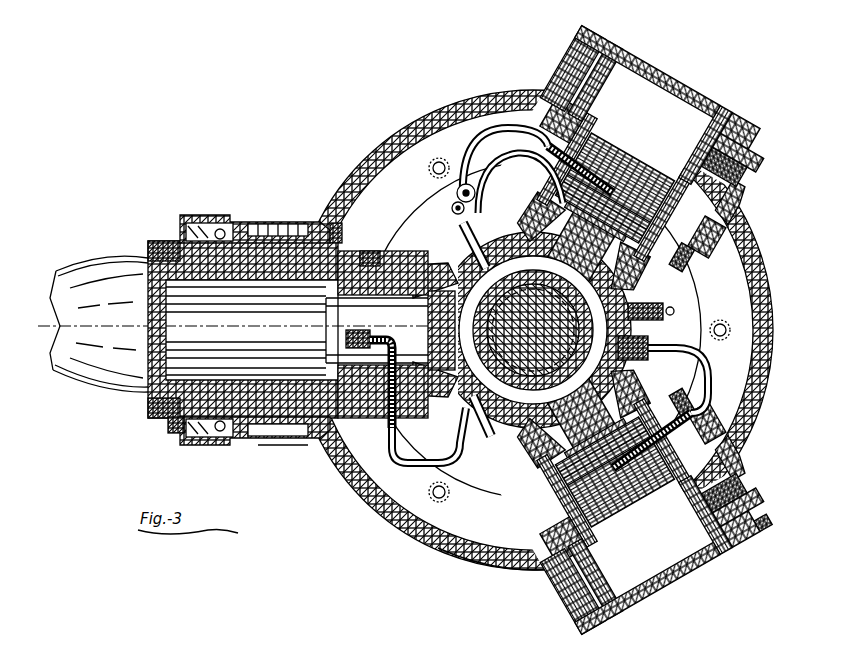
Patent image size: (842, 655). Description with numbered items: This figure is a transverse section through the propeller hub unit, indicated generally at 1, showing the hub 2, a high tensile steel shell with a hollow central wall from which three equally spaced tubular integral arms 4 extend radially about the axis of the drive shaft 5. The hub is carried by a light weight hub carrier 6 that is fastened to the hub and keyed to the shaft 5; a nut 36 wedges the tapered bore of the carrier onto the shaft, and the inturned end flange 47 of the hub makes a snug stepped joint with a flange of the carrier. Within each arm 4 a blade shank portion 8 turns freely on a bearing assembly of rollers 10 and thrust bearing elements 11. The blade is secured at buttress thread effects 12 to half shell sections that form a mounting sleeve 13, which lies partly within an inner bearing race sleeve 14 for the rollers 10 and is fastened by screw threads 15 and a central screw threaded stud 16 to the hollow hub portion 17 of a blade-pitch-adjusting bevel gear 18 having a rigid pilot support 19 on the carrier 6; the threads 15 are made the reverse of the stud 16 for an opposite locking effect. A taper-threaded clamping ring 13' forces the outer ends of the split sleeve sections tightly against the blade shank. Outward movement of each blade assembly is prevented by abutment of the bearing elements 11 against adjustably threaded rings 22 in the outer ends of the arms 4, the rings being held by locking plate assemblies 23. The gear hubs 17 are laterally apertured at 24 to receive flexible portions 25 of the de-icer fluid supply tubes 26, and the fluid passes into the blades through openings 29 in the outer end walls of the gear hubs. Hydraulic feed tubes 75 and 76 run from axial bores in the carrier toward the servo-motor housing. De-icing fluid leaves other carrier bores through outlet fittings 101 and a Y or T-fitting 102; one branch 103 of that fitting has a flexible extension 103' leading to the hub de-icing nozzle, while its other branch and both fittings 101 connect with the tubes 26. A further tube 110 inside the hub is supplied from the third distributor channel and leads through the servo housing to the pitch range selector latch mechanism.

The engine 1 is at (365, 110).
The hub 2 is at (494, 545).
The tubular integral arms 4 is at (752, 150).
The drive shaft 5 is at (440, 385).
The hub carrier 6 is at (24, 286).
The shank portions 8 is at (88, 380).
The rollers 10 is at (272, 207).
The thrust bearing elements 11 is at (205, 210).
The buttress thread effects 12 is at (240, 212).
The mounting sleeves 13 is at (443, 330).
The clamping ring 13' is at (150, 308).
The inner bearing race sleeves 14 is at (742, 526).
The screw threads 15 is at (338, 230).
The central screw threaded studs 16 is at (710, 70).
The shank or hub portions 17 is at (352, 250).
The blade-pitch-adjusting bevel gears 18 is at (426, 260).
The pilot supports 19 is at (436, 262).
The adjustably threaded rings 22 is at (202, 437).
The locking plate assemblies 23 is at (160, 420).
The lateral apertures 24 is at (582, 226).
The flexible portions 25 is at (540, 130).
The supply tubes 26 is at (382, 418).
The openings 29 is at (358, 345).
The nut 36 is at (622, 292).
The inturned end flange 47 is at (418, 532).
The feed tube 75 is at (456, 236).
The feed tube 76 is at (466, 478).
The outlet fittings 101 is at (450, 440).
The Y or T-fitting 102 is at (500, 200).
The branch 103 is at (424, 212).
The flexible extension 103' is at (435, 191).
The tube 110 is at (680, 284).